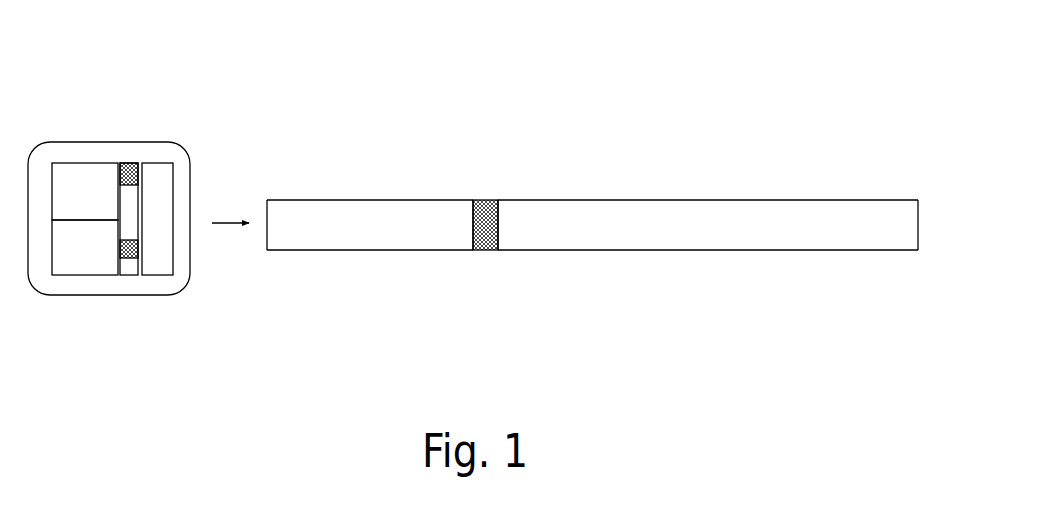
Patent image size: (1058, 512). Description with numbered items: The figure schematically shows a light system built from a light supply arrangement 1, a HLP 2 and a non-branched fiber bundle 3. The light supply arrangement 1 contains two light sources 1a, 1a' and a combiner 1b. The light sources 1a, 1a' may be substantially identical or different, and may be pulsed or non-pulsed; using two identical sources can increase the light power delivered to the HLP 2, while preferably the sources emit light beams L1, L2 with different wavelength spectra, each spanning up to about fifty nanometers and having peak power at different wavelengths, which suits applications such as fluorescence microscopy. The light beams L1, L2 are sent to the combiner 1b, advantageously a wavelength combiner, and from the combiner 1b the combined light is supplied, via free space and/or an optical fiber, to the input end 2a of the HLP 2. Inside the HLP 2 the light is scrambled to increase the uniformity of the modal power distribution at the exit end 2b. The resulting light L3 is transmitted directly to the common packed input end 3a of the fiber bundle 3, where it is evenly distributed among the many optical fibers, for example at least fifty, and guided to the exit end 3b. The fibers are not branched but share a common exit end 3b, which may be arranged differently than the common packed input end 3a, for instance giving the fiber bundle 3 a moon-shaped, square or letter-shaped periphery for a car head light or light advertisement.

The light supply arrangement 1 is at (138, 92).
The light source 1a is at (79, 290).
The light source 1a' is at (74, 153).
The combiner 1b is at (160, 264).
The light beam L1 is at (127, 264).
The light beam L2 is at (127, 162).
The HLP 2 is at (350, 132).
The input end of the HLP 2a is at (267, 197).
The exit end of the HLP 2b is at (473, 197).
The fiber bundle 3 is at (671, 172).
The common packed input end of the fiber bundle 3a is at (498, 197).
The exit end of the fibers of the fiber bundle 3b is at (917, 198).
The light beam L3 is at (488, 265).